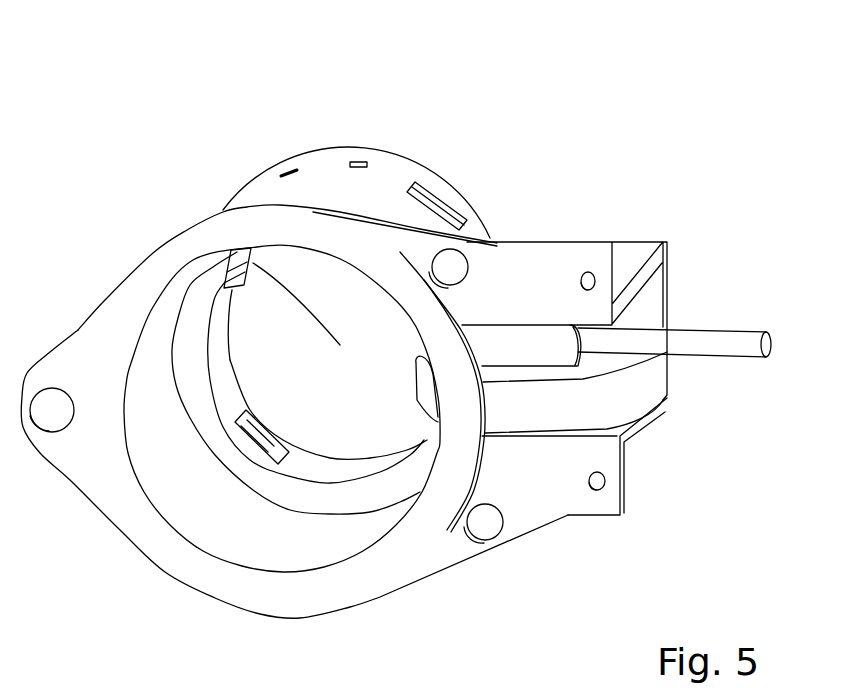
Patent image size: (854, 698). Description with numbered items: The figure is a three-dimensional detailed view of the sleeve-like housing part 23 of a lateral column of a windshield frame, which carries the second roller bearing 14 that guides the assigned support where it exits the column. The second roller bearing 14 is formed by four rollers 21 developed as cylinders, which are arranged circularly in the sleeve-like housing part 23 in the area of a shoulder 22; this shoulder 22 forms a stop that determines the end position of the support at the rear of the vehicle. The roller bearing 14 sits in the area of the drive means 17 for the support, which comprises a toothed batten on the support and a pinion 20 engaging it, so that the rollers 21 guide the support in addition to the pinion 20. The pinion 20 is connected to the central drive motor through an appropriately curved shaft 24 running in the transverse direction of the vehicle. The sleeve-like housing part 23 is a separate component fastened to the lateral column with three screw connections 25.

The second roller bearing 14 is at (448, 200).
The drive means 17 is at (703, 345).
The pinion 20 is at (645, 392).
The rollers 21 is at (239, 264).
The shoulder 22 is at (199, 294).
The sleeve-like housing part 23 is at (632, 255).
The curved shaft 24 is at (745, 343).
The screw connections 25 is at (52, 408).